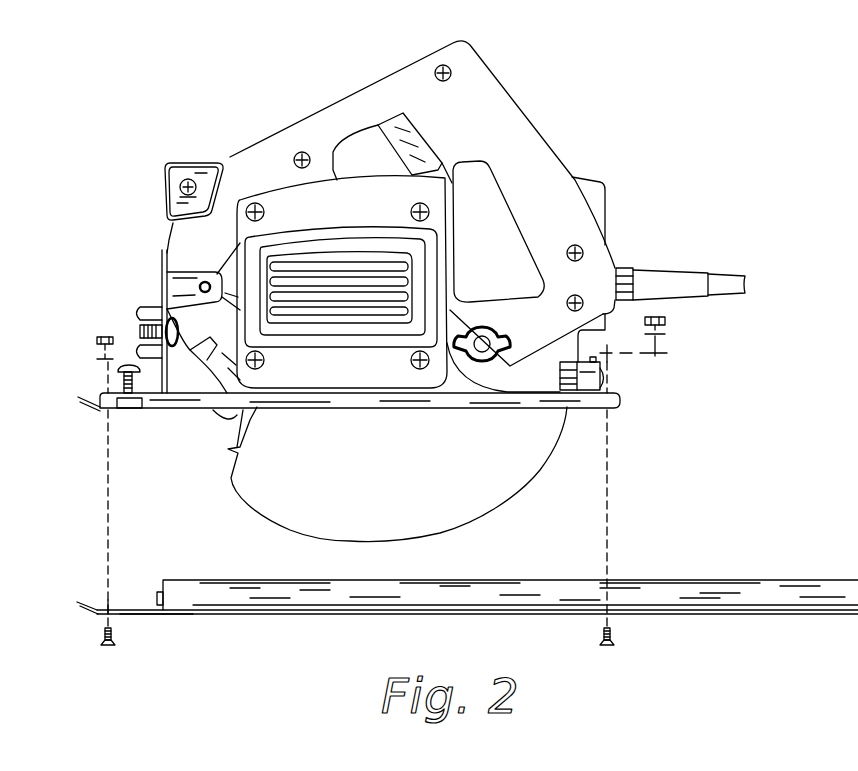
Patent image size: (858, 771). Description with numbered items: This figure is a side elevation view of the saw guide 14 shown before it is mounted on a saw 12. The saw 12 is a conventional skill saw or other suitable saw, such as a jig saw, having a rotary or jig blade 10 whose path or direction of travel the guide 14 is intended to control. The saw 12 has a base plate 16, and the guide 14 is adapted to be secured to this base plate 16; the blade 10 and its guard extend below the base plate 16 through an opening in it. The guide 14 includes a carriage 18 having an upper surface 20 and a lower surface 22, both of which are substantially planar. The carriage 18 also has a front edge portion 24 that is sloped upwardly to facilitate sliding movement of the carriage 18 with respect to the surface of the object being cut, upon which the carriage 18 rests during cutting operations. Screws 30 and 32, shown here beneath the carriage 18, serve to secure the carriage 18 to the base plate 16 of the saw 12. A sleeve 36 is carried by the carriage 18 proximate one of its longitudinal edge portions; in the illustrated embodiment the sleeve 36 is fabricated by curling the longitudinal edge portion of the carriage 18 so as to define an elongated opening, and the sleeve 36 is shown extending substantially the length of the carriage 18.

The blade 10 is at (230, 446).
The saw 12 is at (512, 68).
The saw guide 14 is at (513, 580).
The base plate 16 is at (177, 400).
The carriage 18 is at (445, 613).
The upper surface 20 is at (137, 608).
The lower surface 22 is at (143, 617).
The front edge portion 24 is at (93, 600).
The screw 30 is at (100, 643).
The screw 32 is at (614, 637).
The sleeve 36 is at (283, 587).